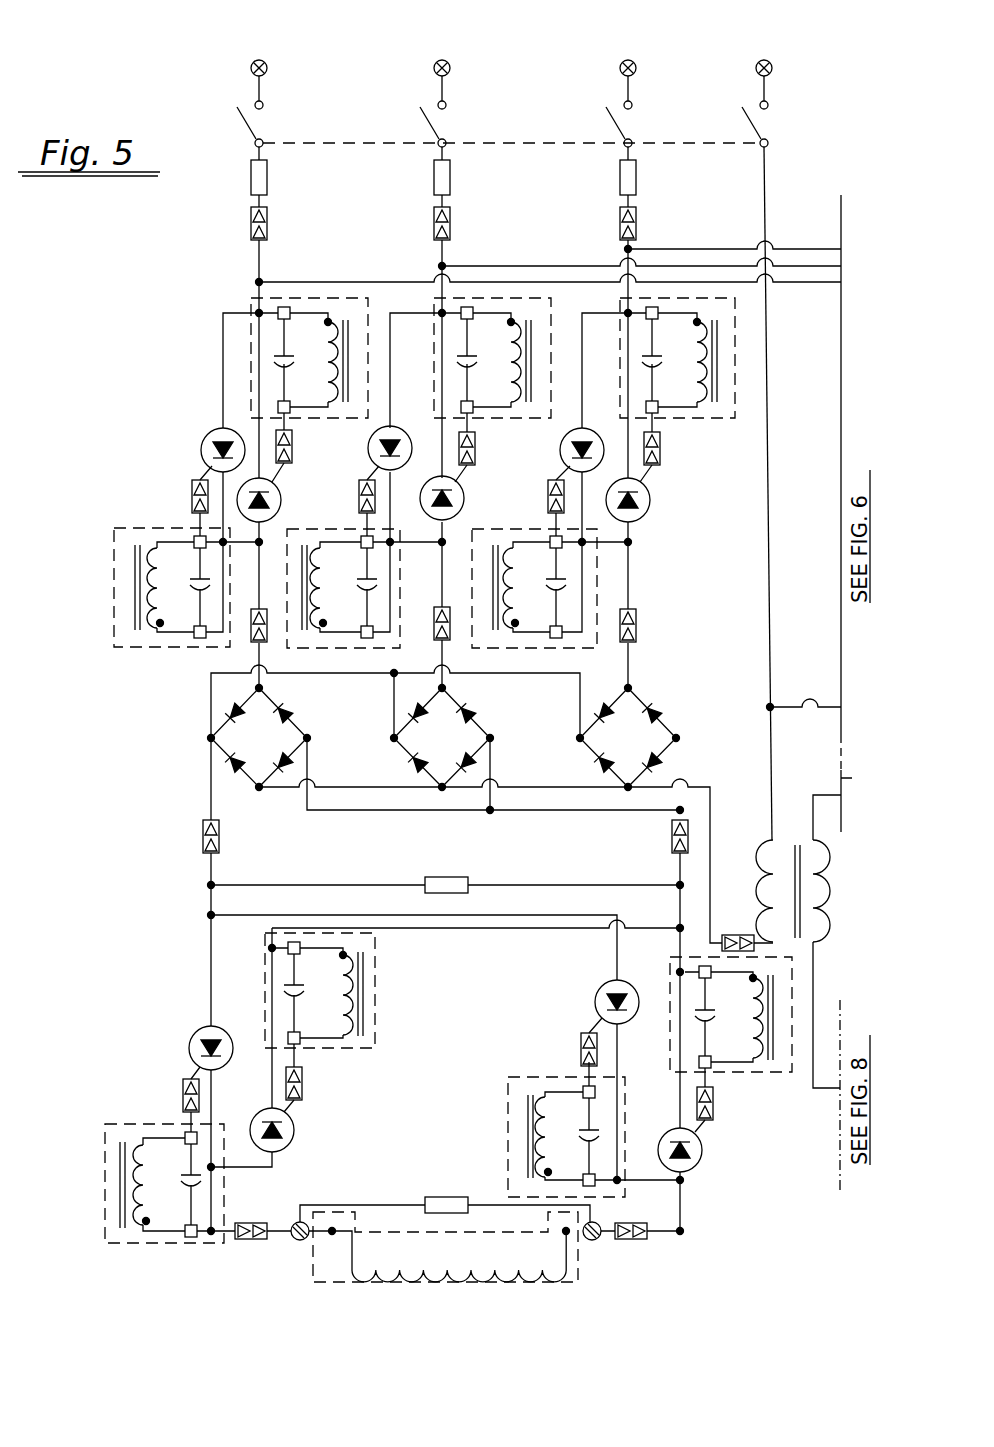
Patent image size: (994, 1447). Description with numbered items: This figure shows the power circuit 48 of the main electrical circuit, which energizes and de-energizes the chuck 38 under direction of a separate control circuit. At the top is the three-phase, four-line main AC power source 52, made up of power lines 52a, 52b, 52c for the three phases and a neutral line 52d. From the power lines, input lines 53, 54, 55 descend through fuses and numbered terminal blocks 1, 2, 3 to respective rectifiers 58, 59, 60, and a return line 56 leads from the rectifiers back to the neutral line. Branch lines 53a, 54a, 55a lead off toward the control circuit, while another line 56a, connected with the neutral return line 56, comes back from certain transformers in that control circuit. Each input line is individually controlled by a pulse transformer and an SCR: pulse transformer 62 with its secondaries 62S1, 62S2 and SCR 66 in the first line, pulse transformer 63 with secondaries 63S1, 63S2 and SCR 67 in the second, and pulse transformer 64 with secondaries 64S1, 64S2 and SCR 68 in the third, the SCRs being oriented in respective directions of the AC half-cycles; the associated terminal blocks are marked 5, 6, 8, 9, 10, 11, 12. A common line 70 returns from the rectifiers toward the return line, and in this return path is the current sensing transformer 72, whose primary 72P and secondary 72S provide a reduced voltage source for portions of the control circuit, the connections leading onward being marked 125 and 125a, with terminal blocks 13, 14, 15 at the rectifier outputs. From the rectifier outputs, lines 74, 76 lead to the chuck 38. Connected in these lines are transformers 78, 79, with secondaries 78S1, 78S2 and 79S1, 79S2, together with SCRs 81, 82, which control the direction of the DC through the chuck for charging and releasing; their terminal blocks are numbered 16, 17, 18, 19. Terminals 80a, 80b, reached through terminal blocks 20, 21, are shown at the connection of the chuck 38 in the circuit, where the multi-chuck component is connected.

The MAIN AC power source 52 is at (581, 33).
The power line 52a is at (251, 32).
The power line 52b is at (434, 32).
The power line 52c is at (620, 32).
The neutral line 52d is at (760, 32).
The input line 53 is at (262, 91).
The input line 54 is at (445, 91).
The input line 55 is at (631, 91).
The return line 56 is at (767, 91).
The power circuit 48 is at (220, 220).
The terminal 1 is at (248, 223).
The terminal 2 is at (432, 223).
The terminal 3 is at (618, 223).
The terminal 5 is at (252, 625).
The terminal 6 is at (290, 447).
The terminal 8 is at (435, 623).
The terminal 9 is at (473, 447).
The terminal 10 is at (543, 499).
The terminal 11 is at (643, 625).
The terminal 12 is at (664, 447).
The terminal 13 is at (217, 836).
The terminal 14 is at (736, 943).
The terminal 15 is at (679, 836).
The terminal 16 is at (181, 1099).
The terminal 17 is at (309, 1078).
The terminal 18 is at (577, 1052).
The terminal 19 is at (717, 1100).
The terminal 20 is at (251, 1243).
The terminal 21 is at (631, 1243).
The pulse transformer 62 is at (236, 298).
The secondary of pulse transformer 62S1 is at (354, 298).
The secondary of pulse transformer 62S2 is at (138, 540).
The pulse transformer 63 is at (502, 297).
The secondary of pulse transformer 63S1 is at (520, 318).
The secondary of pulse transformer 63S2 is at (320, 540).
The pulse transformer 64 is at (673, 294).
The secondary of pulse transformer 64S1 is at (702, 318).
The secondary of pulse transformer 64S2 is at (510, 540).
The SCR 66 is at (238, 498).
The SCR 67 is at (428, 480).
The SCR 68 is at (606, 480).
The line to control circuit 53a is at (794, 283).
The line to control circuit 54a is at (820, 268).
The line to control circuit 55a is at (795, 249).
The neutral connection line 56a is at (771, 507).
The rectifier 58 is at (296, 730).
The rectifier 59 is at (480, 728).
The rectifier 60 is at (669, 726).
The common line 70 is at (509, 790).
The current sensing transformer 72 is at (797, 832).
The primary of current sensing transformer 72P is at (803, 895).
The secondary of current sensing transformer 72S is at (823, 904).
The output line to FIG. 6 125 is at (862, 513).
The output line to FIG. 8 125a is at (838, 1132).
The output line 74 is at (213, 880).
The output line 76 is at (679, 885).
The transformer 78 is at (128, 1118).
The secondary of transformer 78S1 is at (133, 1172).
The secondary of transformer 78S2 is at (738, 1072).
The transformer 79 is at (334, 1066).
The secondary of transformer 79S1 is at (530, 1138).
The secondary of transformer 79S2 is at (355, 1018).
The SCR 81 is at (229, 1034).
The SCR 82 is at (290, 1152).
The terminal 80a is at (296, 1244).
The terminal 80b is at (607, 1244).
The chuck 38 is at (357, 1292).